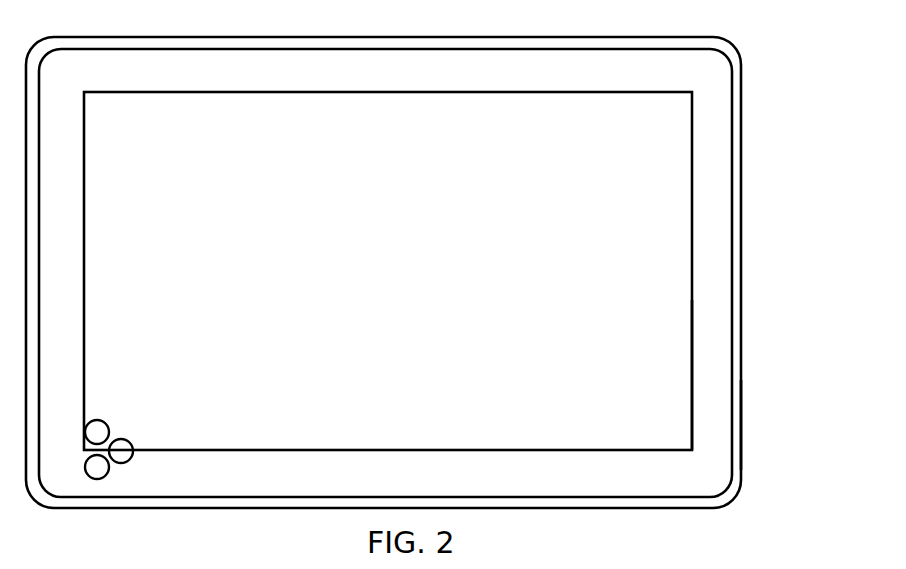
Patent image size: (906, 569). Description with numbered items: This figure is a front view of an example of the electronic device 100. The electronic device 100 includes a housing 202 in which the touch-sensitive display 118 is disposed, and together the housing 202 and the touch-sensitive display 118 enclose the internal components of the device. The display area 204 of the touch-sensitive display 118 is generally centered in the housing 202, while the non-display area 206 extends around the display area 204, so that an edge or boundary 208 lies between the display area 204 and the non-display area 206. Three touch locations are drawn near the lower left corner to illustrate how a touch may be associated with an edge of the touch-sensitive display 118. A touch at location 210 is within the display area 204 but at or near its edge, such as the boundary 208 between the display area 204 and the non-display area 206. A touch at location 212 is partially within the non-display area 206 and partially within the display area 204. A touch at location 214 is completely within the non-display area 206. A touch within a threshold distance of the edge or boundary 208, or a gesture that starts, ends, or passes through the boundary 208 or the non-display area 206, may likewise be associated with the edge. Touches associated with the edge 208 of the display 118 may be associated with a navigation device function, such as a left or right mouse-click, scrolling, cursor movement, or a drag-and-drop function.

The electronic device 100 is at (701, 541).
The touch-sensitive display 118 is at (733, 423).
The housing 202 is at (734, 83).
The display area 204 is at (682, 327).
The non-display area 206 is at (717, 193).
The edge or boundary 208 is at (693, 378).
The location 210 is at (103, 421).
The location 212 is at (132, 444).
The location 214 is at (106, 475).